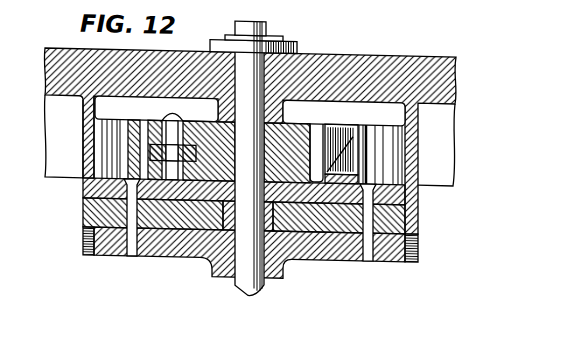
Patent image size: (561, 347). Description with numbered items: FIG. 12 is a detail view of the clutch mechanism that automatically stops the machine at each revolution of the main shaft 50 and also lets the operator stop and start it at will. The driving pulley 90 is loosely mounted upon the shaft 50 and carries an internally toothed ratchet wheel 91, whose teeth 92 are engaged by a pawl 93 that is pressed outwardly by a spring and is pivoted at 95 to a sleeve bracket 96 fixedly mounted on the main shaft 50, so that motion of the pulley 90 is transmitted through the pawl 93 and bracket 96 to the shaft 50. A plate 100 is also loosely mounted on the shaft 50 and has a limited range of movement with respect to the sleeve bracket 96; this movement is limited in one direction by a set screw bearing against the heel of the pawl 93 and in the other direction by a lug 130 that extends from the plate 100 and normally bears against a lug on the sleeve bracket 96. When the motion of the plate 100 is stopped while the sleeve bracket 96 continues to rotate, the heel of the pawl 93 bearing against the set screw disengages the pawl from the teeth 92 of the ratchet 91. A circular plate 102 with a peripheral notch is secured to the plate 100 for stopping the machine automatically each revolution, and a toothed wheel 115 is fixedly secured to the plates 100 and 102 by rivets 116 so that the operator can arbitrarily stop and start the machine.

The driving pulley 90 is at (343, 56).
The ratchet wheel 91 is at (83, 127).
The teeth 92 is at (107, 143).
The pawl 93 is at (138, 113).
The pawl pivot 95 is at (195, 114).
The sleeve bracket 96 is at (297, 122).
The lug 130 is at (346, 121).
The plate 100 is at (83, 189).
The circular plate 102 is at (83, 213).
The toothed wheel 115 is at (104, 255).
The rivets 116 is at (130, 254).
The main shaft 50 is at (237, 280).